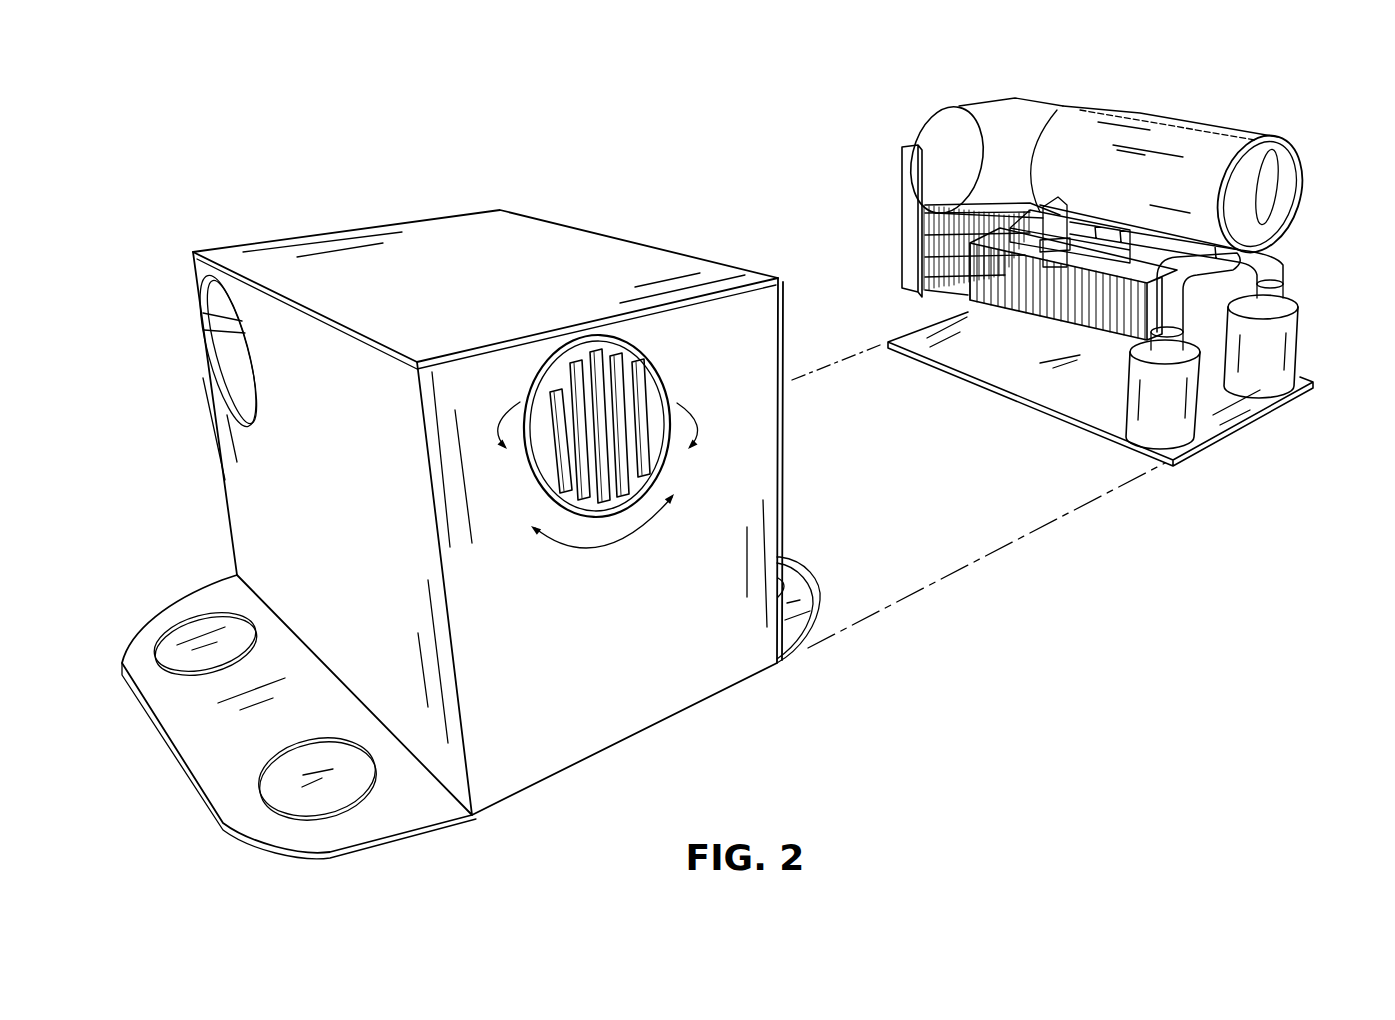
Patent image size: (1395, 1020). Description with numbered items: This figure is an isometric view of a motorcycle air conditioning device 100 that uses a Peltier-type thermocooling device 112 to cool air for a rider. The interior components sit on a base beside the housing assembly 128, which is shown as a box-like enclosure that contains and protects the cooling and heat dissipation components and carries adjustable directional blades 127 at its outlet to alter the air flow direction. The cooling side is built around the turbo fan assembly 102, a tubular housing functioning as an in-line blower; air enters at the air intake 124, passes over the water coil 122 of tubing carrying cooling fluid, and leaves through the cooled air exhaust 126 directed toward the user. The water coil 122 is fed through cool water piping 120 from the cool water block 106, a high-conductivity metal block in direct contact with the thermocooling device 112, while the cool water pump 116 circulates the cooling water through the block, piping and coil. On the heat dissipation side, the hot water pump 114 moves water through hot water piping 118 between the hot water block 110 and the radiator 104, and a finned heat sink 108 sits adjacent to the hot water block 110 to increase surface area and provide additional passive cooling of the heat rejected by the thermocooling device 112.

The motorcycle air conditioning device 100 is at (500, 142).
The turbo fan assembly 102 is at (1165, 137).
The radiator 104 is at (923, 250).
The cool water block 106 is at (1087, 235).
The heat sink 108 is at (1000, 300).
The hot water block 110 is at (1015, 203).
The thermocooling device 112 is at (1100, 247).
The hot water pump 114 is at (1297, 347).
The cool water pump 116 is at (1178, 430).
The hot water piping 118 is at (1284, 287).
The cool water piping 120 is at (1180, 310).
The water coil 122 is at (1263, 160).
The air intake 124 is at (945, 141).
The cooled air exhaust 126 is at (1312, 170).
The directional blades 127 is at (660, 468).
The housing assembly 128 is at (612, 712).